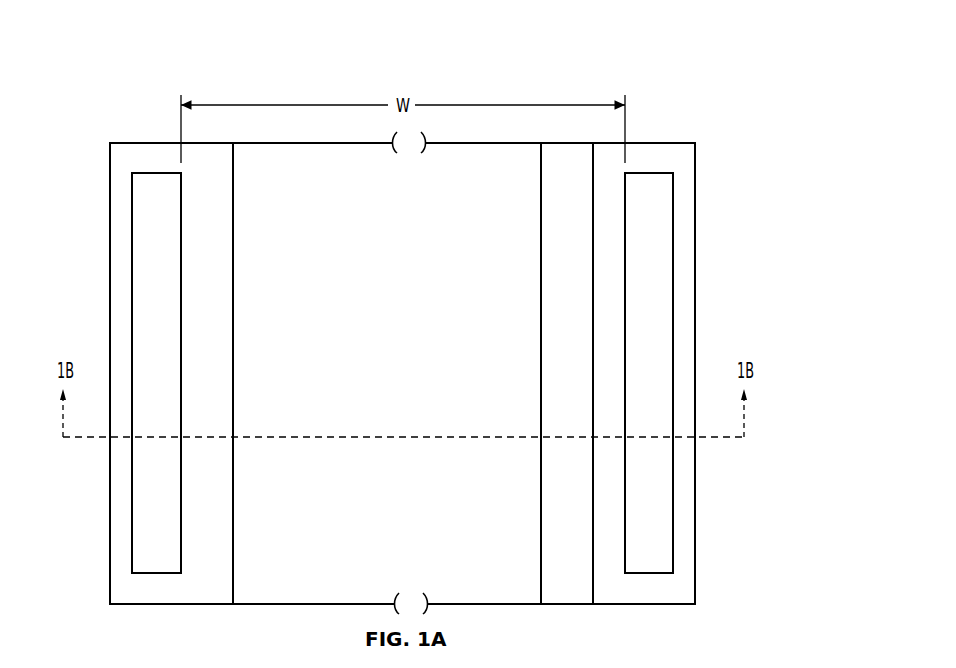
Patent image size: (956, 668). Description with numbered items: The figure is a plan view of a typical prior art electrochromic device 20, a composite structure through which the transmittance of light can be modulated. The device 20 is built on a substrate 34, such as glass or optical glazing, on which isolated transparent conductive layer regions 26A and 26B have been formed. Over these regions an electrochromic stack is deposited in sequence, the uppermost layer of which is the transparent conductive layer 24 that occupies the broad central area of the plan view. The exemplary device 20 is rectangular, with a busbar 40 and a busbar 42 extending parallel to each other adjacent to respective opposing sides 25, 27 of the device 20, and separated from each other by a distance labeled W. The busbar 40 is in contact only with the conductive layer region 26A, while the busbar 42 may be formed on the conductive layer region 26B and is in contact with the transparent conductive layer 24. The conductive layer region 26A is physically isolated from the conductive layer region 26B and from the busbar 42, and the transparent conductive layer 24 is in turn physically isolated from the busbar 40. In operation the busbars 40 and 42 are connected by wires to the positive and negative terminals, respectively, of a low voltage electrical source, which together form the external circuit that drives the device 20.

The electrochromic device 20 is at (723, 204).
The transparent conductive layer 24 is at (486, 383).
The side of the device 25 is at (110, 324).
The transparent conductive layer region 26A is at (189, 600).
The transparent conductive layer region 26B is at (640, 600).
The side of the device 27 is at (695, 326).
The substrate 34 is at (577, 522).
The busbar 40 is at (143, 287).
The busbar 42 is at (663, 287).